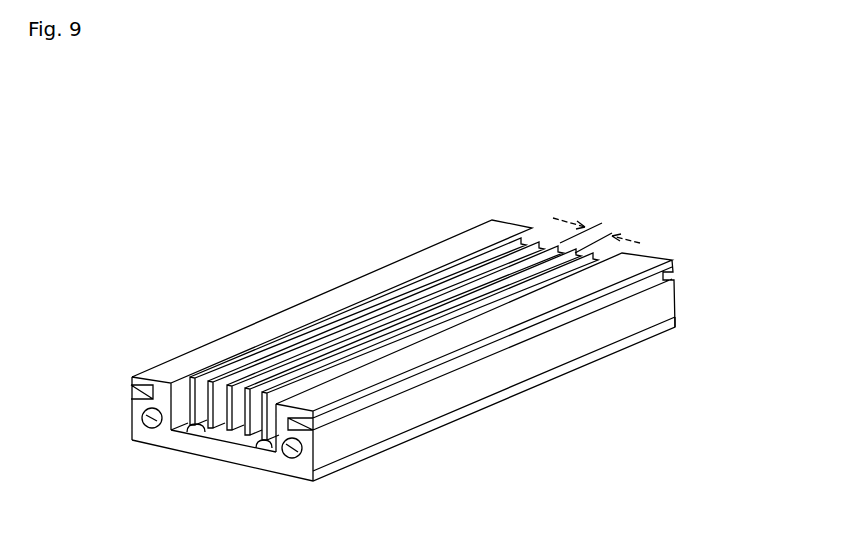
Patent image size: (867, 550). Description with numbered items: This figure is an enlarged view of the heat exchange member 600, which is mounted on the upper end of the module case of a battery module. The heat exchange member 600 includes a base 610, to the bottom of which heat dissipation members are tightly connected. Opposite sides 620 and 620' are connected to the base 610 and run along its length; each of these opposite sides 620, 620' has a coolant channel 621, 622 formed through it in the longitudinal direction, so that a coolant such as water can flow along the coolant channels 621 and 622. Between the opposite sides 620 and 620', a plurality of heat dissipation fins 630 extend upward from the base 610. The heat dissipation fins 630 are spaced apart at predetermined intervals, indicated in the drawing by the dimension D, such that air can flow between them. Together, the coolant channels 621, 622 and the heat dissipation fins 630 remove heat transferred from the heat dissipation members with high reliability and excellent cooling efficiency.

The heat exchange member 600 is at (92, 61).
The base 610 is at (455, 417).
The side 620 is at (319, 330).
The side 620' is at (467, 362).
The coolant channel 621 is at (140, 423).
The coolant channel 622 is at (283, 452).
The heat dissipation fins 630 is at (403, 285).